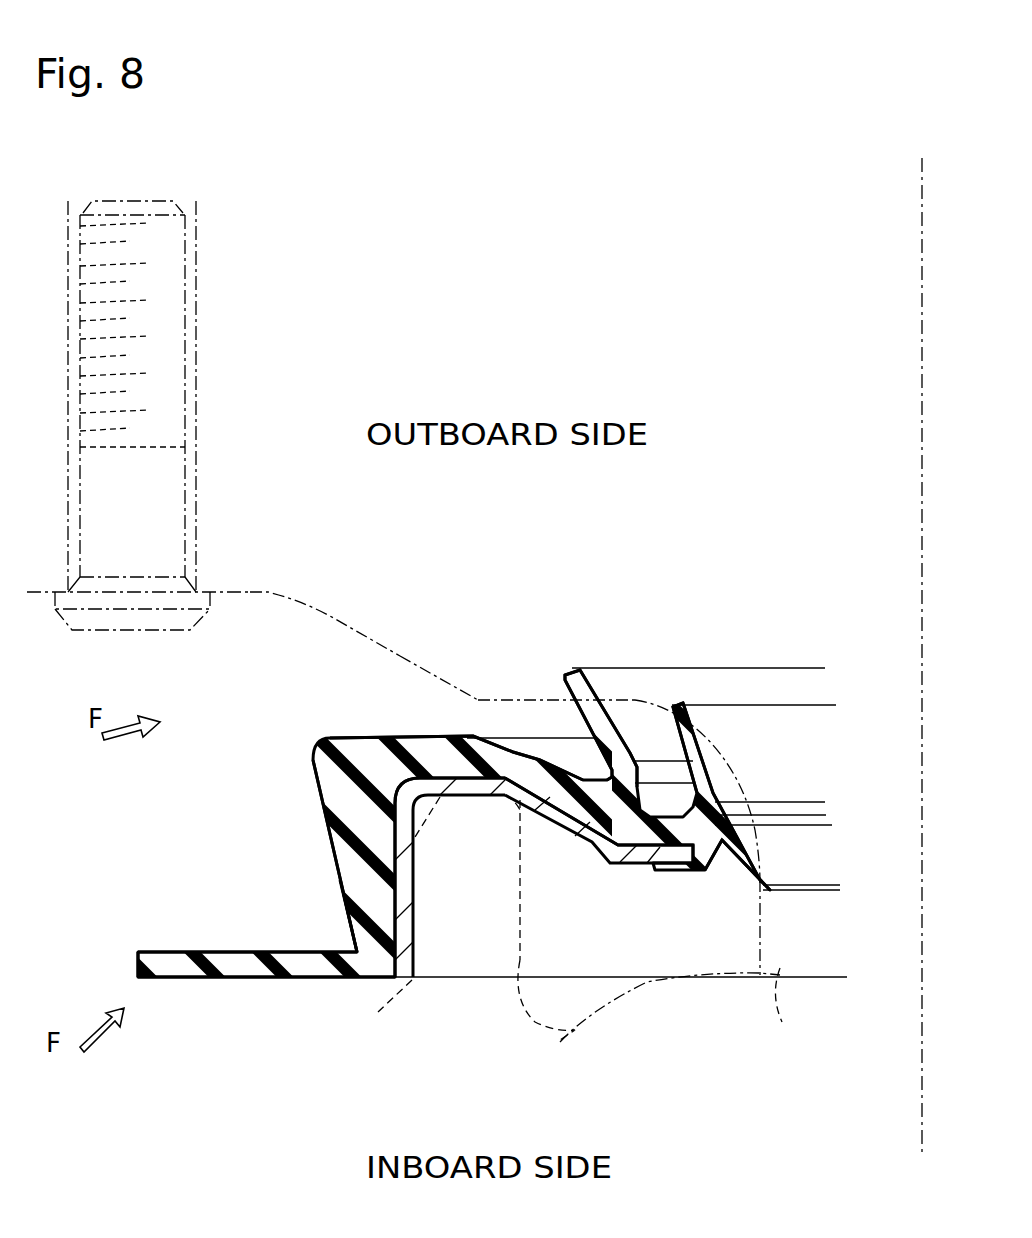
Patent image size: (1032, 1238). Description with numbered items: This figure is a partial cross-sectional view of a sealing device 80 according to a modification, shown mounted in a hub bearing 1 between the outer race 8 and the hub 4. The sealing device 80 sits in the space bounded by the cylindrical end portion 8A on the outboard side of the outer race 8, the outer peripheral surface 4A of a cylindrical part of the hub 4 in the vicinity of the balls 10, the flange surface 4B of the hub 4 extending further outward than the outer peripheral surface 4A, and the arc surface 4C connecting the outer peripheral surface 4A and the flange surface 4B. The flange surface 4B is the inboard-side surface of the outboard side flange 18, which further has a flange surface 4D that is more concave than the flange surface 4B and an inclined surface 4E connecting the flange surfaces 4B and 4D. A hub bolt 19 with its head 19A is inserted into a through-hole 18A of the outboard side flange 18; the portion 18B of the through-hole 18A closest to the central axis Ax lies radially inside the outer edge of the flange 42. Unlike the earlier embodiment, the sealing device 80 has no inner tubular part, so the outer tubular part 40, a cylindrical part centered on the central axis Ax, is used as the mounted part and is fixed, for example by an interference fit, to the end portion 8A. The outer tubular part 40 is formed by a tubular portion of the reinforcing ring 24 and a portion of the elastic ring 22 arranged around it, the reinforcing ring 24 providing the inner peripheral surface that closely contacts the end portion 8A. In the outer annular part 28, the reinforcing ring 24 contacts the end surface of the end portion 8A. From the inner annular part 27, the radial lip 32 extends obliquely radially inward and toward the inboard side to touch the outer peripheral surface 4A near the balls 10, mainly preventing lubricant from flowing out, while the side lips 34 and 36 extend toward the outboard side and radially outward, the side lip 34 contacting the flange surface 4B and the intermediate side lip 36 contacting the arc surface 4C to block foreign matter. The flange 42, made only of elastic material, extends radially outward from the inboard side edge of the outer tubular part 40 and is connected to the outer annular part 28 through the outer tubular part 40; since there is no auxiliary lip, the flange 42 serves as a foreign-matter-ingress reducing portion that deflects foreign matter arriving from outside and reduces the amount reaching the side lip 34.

The hub bearing 1 is at (250, 816).
The hub 4 is at (783, 980).
The outer peripheral surface 4A is at (760, 938).
The flange surface 4B is at (538, 703).
The arc surface 4C is at (732, 772).
The flange surface 4D is at (262, 592).
The inclined surface 4E is at (397, 654).
The outer race 8 is at (522, 942).
The cylindrical end portion 8A is at (522, 912).
The balls 10 is at (800, 985).
The outboard side flange 18 is at (243, 592).
The through-hole 18A is at (70, 505).
The portion closest to the central axis 18B is at (195, 397).
The hub bolt 19 is at (197, 436).
The head 19A is at (72, 627).
The elastic ring 22 is at (316, 778).
The reinforcing ring 24 is at (478, 795).
The inner annular part 27 is at (563, 850).
The outer annular part 28 is at (428, 738).
The radial lip 32 is at (768, 885).
The side lip 34 is at (600, 680).
The side lip 36 is at (700, 710).
The outer tubular part 40 is at (355, 880).
The flange 42 is at (185, 955).
The sealing device 80 is at (566, 604).
The central axis Ax is at (920, 1145).